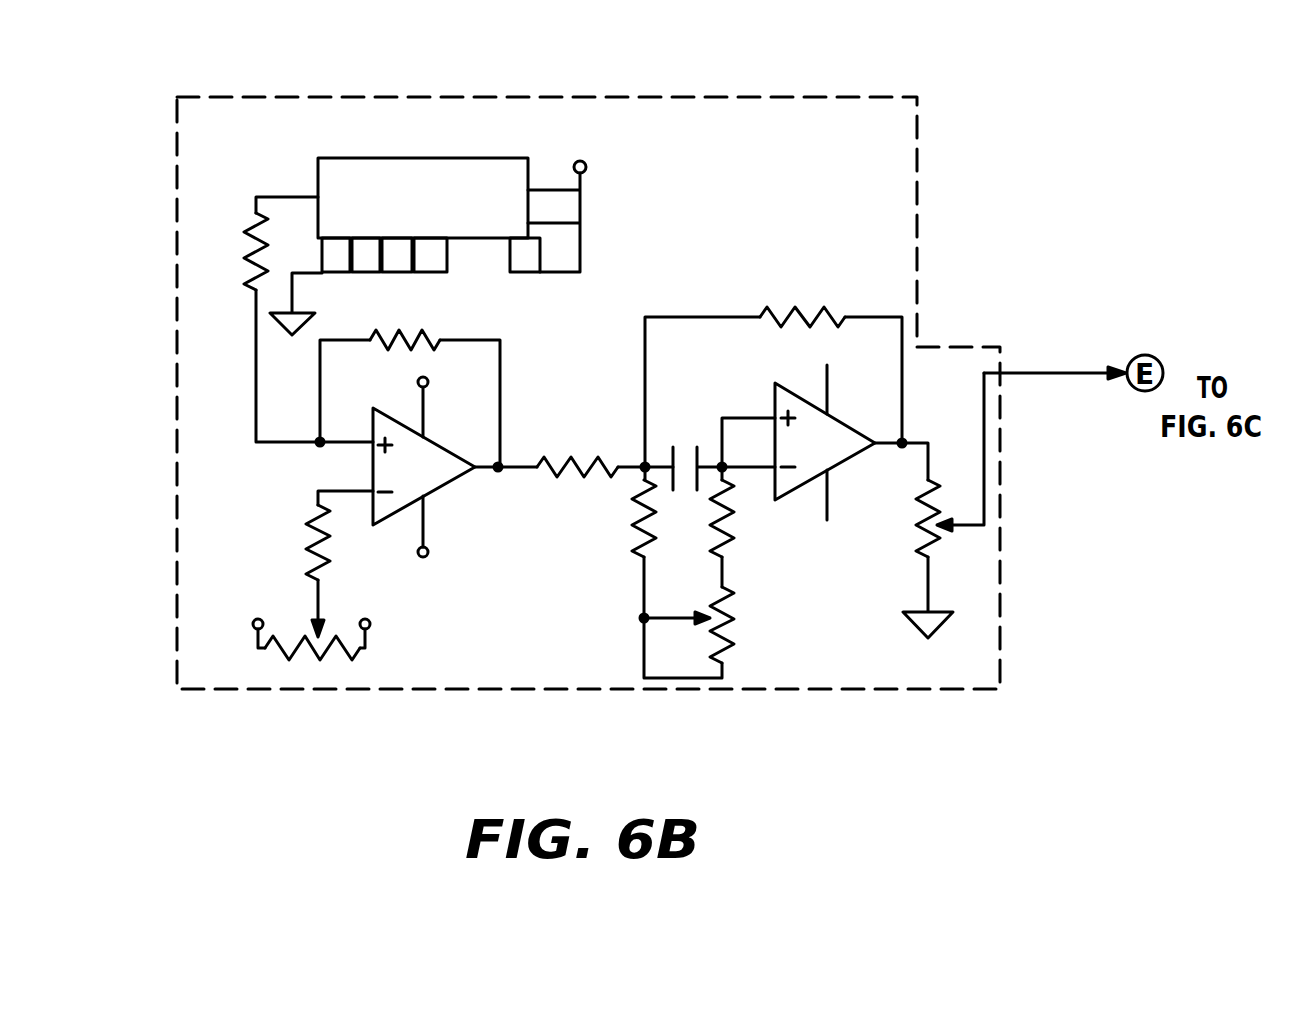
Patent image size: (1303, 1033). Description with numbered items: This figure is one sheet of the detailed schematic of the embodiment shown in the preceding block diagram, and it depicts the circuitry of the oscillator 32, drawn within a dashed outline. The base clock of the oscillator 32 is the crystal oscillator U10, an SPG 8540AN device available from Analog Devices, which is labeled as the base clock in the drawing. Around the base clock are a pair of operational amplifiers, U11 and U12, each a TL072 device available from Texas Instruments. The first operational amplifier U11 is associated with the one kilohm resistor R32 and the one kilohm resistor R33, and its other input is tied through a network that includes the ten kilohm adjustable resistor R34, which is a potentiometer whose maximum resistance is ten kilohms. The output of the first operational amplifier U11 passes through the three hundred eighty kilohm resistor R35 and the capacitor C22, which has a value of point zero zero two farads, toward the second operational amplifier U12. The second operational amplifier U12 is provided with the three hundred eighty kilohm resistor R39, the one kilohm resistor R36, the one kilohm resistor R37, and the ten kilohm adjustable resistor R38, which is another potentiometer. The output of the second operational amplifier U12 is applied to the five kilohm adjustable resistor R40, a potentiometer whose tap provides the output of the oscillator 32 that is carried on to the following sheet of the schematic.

The oscillator 32 is at (348, 92).
The SPG 8540AN crystal oscillator (base clock) U10 is at (448, 225).
The 1K ohm resistor R32 is at (279, 329).
The 1K ohm resistor R33 is at (410, 377).
The TL072 operational amplifier U11 is at (426, 465).
The 10K ohm adjustable resistor R34 is at (319, 591).
The 380K ohm resistor R35 is at (574, 442).
The .002 F capacitor C22 is at (717, 445).
The 380K ohm resistor R39 is at (775, 366).
The TL072 operational amplifier U12 is at (810, 445).
The 1K ohm resistor R36 is at (647, 572).
The 1K ohm resistor R37 is at (749, 527).
The 10K ohm adjustable resistor R38 is at (717, 625).
The 5K ohm adjustable resistor R40 is at (919, 505).